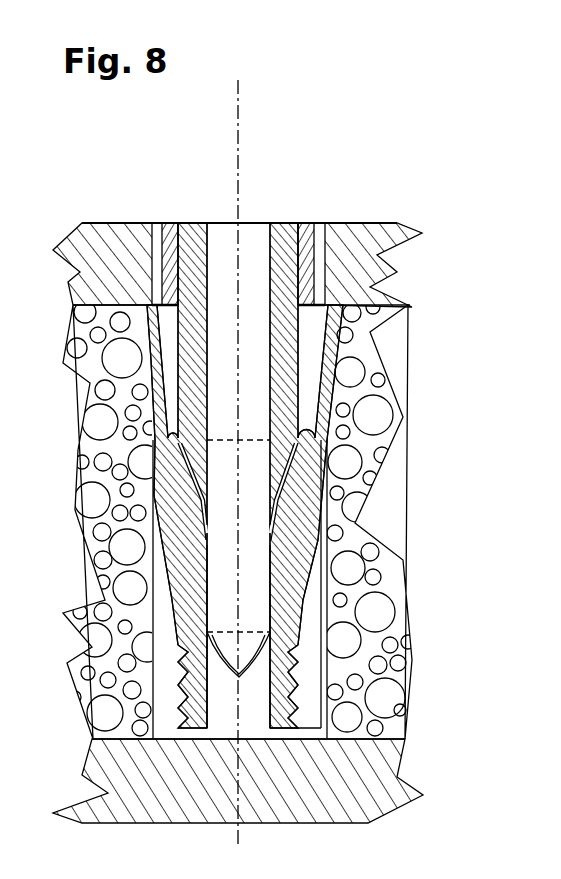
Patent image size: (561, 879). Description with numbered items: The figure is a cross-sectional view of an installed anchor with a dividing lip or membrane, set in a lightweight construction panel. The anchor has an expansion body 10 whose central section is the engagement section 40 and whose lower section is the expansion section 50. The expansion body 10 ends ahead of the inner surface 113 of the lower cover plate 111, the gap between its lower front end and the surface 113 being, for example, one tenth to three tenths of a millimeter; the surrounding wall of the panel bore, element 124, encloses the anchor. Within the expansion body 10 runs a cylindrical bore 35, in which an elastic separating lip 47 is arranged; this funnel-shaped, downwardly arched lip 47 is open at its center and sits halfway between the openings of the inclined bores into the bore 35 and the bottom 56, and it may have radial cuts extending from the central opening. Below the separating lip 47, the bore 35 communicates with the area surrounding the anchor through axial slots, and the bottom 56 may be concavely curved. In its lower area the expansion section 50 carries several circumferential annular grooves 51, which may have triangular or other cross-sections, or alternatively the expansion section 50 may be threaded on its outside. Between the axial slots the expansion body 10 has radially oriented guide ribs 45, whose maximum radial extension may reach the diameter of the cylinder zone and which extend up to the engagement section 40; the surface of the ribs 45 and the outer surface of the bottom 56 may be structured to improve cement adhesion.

The engagement section 40 is at (336, 460).
The expansion body 10 is at (310, 502).
The guide ribs 45 is at (315, 548).
The bore hole wall 124 is at (323, 572).
The expansion section 50 is at (308, 608).
The cylindrical bore 35 is at (270, 623).
The separating lip 47 is at (262, 648).
The annular grooves 51 is at (298, 662).
The bottom 56 is at (330, 739).
The inner surface 113 is at (378, 751).
The lower cover plate 111 is at (293, 781).